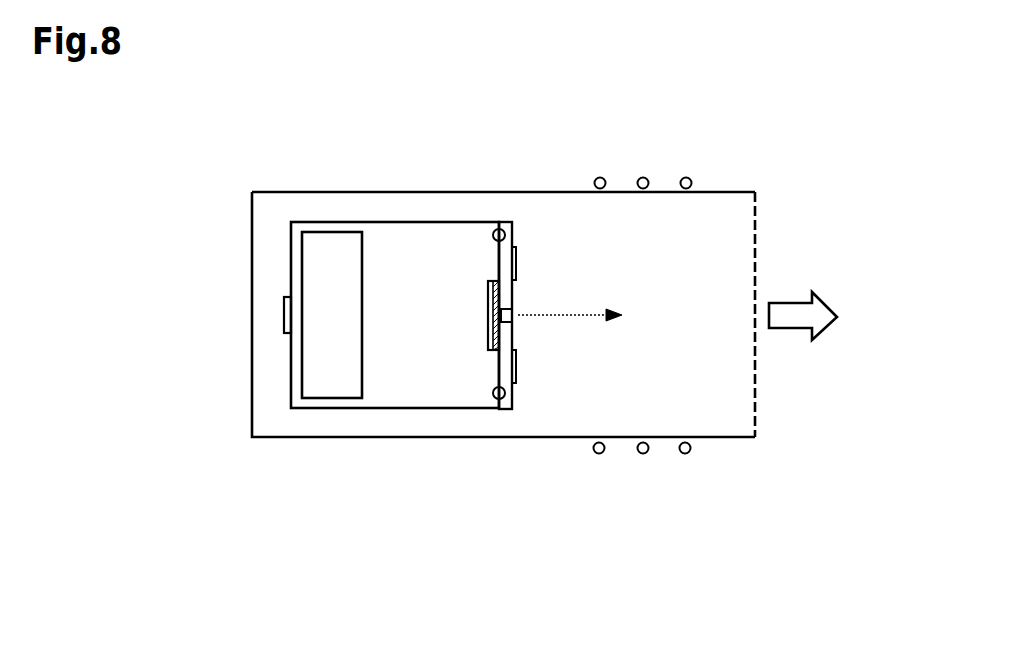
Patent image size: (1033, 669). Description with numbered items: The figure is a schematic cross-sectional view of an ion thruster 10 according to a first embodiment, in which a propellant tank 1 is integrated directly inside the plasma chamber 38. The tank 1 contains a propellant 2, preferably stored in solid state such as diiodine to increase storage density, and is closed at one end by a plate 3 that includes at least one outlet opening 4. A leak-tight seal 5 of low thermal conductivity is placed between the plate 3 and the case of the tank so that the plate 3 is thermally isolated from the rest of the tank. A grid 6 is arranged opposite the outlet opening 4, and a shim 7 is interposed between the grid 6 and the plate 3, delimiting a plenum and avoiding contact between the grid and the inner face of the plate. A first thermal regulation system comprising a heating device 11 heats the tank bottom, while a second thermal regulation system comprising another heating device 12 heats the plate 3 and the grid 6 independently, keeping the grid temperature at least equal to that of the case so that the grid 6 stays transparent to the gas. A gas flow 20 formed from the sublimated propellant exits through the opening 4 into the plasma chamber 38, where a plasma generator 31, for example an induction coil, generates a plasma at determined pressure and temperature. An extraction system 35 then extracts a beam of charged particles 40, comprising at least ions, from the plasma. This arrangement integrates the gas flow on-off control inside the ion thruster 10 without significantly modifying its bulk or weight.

The tank 1 is at (290, 408).
The propellant 2 is at (336, 246).
The plate 3 is at (503, 222).
The opening 4 is at (506, 318).
The leak-tight seal 5 is at (493, 235).
The grid 6 is at (488, 298).
The shim 7 is at (496, 297).
The ion thruster 10 is at (252, 192).
The heating device 11 is at (285, 303).
The heating device 12 is at (516, 262).
The gas flow 20 is at (567, 315).
The plasma generator 31 is at (686, 177).
The extraction system 35 is at (755, 237).
The plasma chamber 38 is at (720, 415).
The beam of charged particles 40 is at (793, 303).